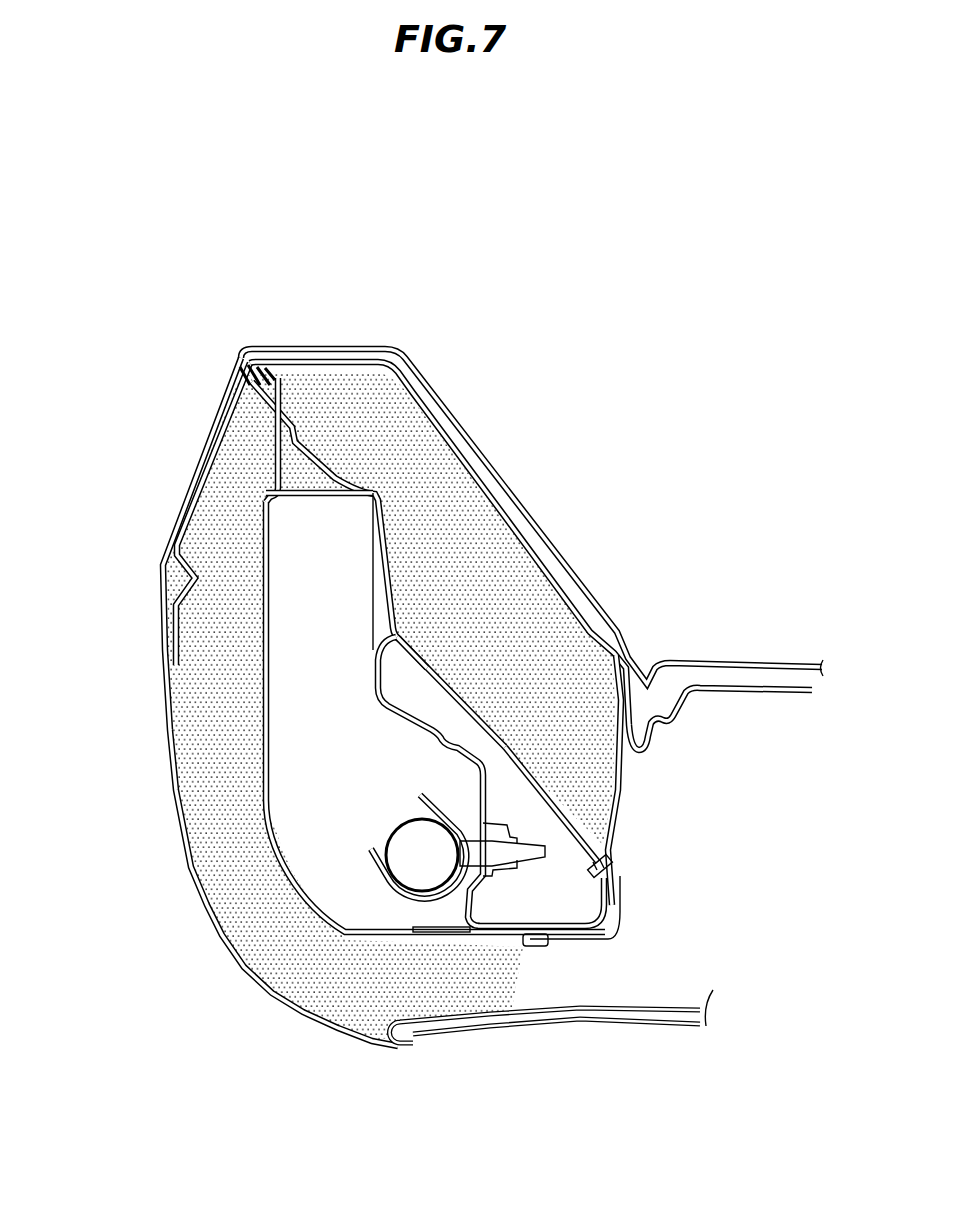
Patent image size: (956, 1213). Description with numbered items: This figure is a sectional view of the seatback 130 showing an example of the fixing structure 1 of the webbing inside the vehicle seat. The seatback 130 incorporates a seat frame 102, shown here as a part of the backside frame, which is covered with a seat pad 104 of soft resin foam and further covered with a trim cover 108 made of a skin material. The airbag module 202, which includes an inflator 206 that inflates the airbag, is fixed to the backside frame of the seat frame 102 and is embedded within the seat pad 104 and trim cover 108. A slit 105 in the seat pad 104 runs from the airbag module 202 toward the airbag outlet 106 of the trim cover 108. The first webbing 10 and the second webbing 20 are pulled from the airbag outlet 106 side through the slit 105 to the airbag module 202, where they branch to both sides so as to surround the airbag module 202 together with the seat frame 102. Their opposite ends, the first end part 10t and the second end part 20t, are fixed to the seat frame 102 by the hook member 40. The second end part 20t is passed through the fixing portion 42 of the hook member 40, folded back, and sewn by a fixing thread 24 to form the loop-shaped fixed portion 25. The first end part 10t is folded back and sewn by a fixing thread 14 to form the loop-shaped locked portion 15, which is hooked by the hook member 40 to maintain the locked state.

The fixing structure 1 is at (655, 963).
The first webbing 10 is at (278, 485).
The first end part 10t is at (478, 962).
The fixing thread 14 is at (526, 946).
The locked portion 15 is at (543, 970).
The second webbing 20 is at (328, 460).
The second end part 20t is at (591, 778).
The fixing thread 24 is at (598, 860).
The fixed portion 25 is at (625, 866).
The hook member 40 is at (620, 938).
The fixing portion 42 is at (626, 894).
The seat frame 102 is at (561, 920).
The seat pad 104 is at (452, 515).
The slit 105 is at (293, 478).
The airbag outlet 106 is at (228, 335).
The trim cover 108 is at (433, 362).
The seatback 130 is at (272, 275).
The airbag module 202 is at (316, 720).
The inflator 206 is at (423, 853).